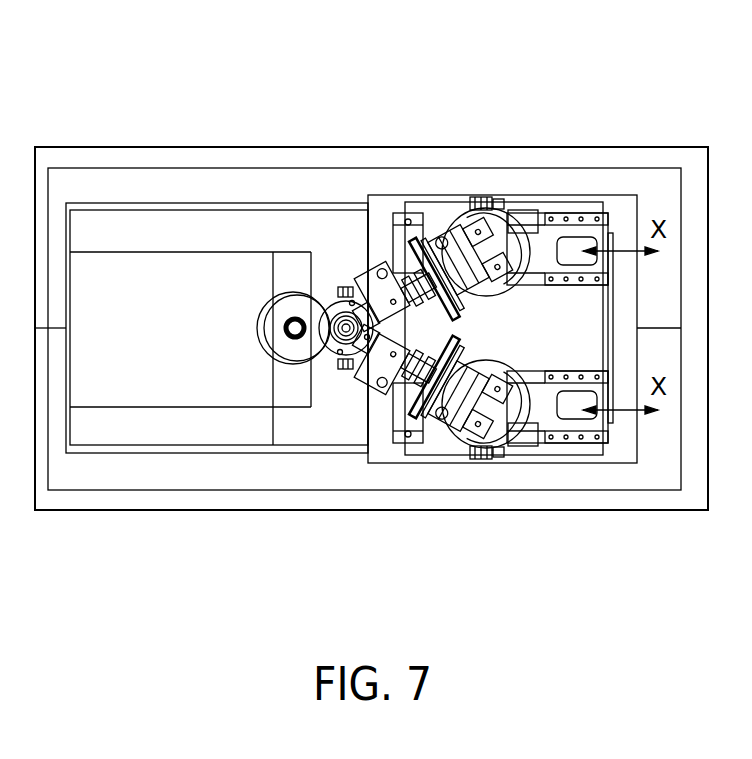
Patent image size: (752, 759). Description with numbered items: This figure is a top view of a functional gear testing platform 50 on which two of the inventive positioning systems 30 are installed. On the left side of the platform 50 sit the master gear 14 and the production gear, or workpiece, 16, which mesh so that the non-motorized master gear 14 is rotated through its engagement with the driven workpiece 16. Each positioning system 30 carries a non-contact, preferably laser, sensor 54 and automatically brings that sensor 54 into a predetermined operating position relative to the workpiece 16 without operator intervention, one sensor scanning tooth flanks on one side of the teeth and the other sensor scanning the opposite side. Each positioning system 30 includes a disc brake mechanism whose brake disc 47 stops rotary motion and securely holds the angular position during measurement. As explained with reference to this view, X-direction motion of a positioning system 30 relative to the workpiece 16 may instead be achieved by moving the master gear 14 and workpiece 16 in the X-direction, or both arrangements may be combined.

The master gear 14 is at (273, 325).
The production gear 16 is at (333, 292).
The positioning system 30 is at (523, 324).
The brake disc 47 is at (510, 190).
The functional testing platform 50 is at (232, 147).
The non-contact sensor 54 is at (372, 262).